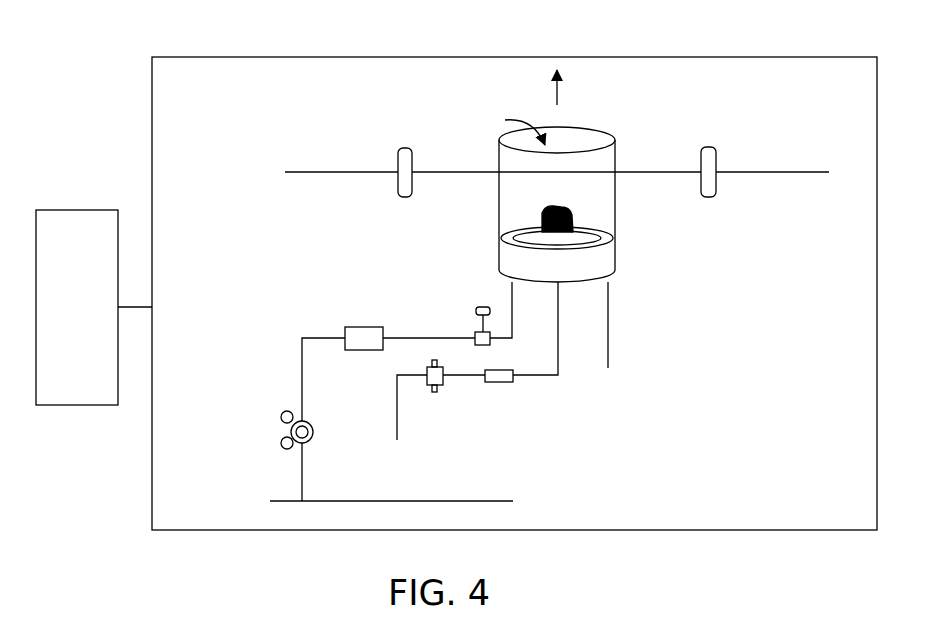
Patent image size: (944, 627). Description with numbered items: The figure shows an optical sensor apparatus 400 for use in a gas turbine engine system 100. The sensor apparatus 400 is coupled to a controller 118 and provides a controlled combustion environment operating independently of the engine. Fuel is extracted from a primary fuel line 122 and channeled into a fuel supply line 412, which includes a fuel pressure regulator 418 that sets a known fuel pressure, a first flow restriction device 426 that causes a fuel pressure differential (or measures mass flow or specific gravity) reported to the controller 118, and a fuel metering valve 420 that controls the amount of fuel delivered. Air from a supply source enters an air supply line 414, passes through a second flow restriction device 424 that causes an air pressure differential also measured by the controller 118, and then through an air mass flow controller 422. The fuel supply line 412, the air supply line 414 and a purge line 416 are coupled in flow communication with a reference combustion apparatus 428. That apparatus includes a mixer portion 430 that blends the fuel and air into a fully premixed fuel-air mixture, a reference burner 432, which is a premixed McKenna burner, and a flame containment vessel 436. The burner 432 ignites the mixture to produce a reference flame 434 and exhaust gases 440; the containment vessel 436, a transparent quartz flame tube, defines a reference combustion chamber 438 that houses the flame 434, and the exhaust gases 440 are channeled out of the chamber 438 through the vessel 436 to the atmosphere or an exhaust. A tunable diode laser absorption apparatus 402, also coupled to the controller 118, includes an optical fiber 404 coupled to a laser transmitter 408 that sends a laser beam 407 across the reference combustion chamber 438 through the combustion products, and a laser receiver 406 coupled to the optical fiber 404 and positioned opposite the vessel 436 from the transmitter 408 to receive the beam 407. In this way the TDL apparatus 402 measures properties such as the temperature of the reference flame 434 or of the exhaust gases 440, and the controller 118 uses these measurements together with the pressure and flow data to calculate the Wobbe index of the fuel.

The gas turbine engine system 100 is at (130, 66).
The controller 118 is at (97, 320).
The primary fuel line 122 is at (490, 501).
The optical sensor apparatus 400 is at (675, 43).
The tunable diode laser absorption apparatus 402 is at (777, 142).
The optical fiber 404 is at (313, 173).
The laser receiver 406 is at (708, 147).
The laser beam 407 is at (678, 173).
The laser transmitter 408 is at (405, 148).
The fuel supply line 412 is at (302, 378).
The air supply line 414 is at (560, 362).
The purge line 416 is at (608, 305).
The fuel pressure regulator 418 is at (315, 425).
The fuel metering valve 420 is at (483, 306).
The air mass flow controller 422 is at (497, 382).
The second flow restriction device 424 is at (432, 392).
The first flow restriction device 426 is at (370, 327).
The reference combustion apparatus 428 is at (483, 247).
The mixer portion 430 is at (612, 260).
The reference burner 432 is at (590, 238).
The reference flame 434 is at (543, 210).
The flame containment vessel 436 is at (616, 142).
The reference combustion chamber 438 is at (502, 126).
The exhaust gases 440 is at (558, 97).